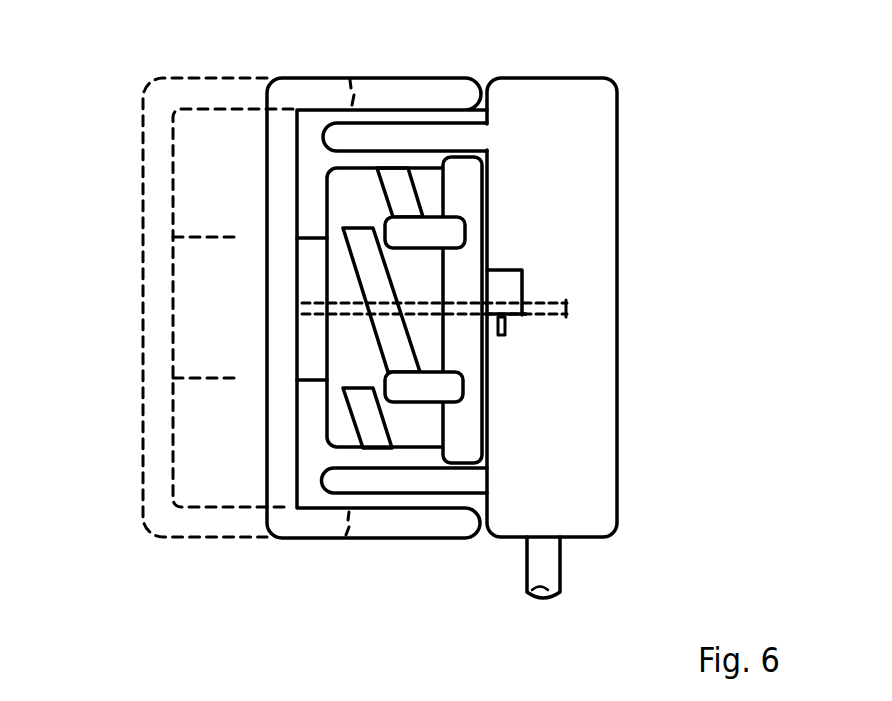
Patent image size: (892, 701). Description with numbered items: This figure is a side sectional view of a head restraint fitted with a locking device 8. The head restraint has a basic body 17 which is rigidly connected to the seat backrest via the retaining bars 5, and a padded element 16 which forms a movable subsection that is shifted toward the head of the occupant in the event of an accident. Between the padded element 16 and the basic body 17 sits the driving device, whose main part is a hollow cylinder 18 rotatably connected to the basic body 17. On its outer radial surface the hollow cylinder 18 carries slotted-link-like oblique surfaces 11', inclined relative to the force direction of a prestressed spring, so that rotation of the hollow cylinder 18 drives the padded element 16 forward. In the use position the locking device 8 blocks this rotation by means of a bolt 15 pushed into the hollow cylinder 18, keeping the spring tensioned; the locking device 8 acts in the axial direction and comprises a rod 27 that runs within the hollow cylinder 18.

The padded element 16 is at (438, 95).
The basic body 17 is at (563, 120).
The hollow cylinder 18 is at (350, 188).
The oblique surfaces 11' is at (238, 300).
The rod 27 is at (428, 315).
The locking device 8 is at (541, 265).
The bolt 15 is at (503, 332).
The retaining bars 5 is at (543, 568).